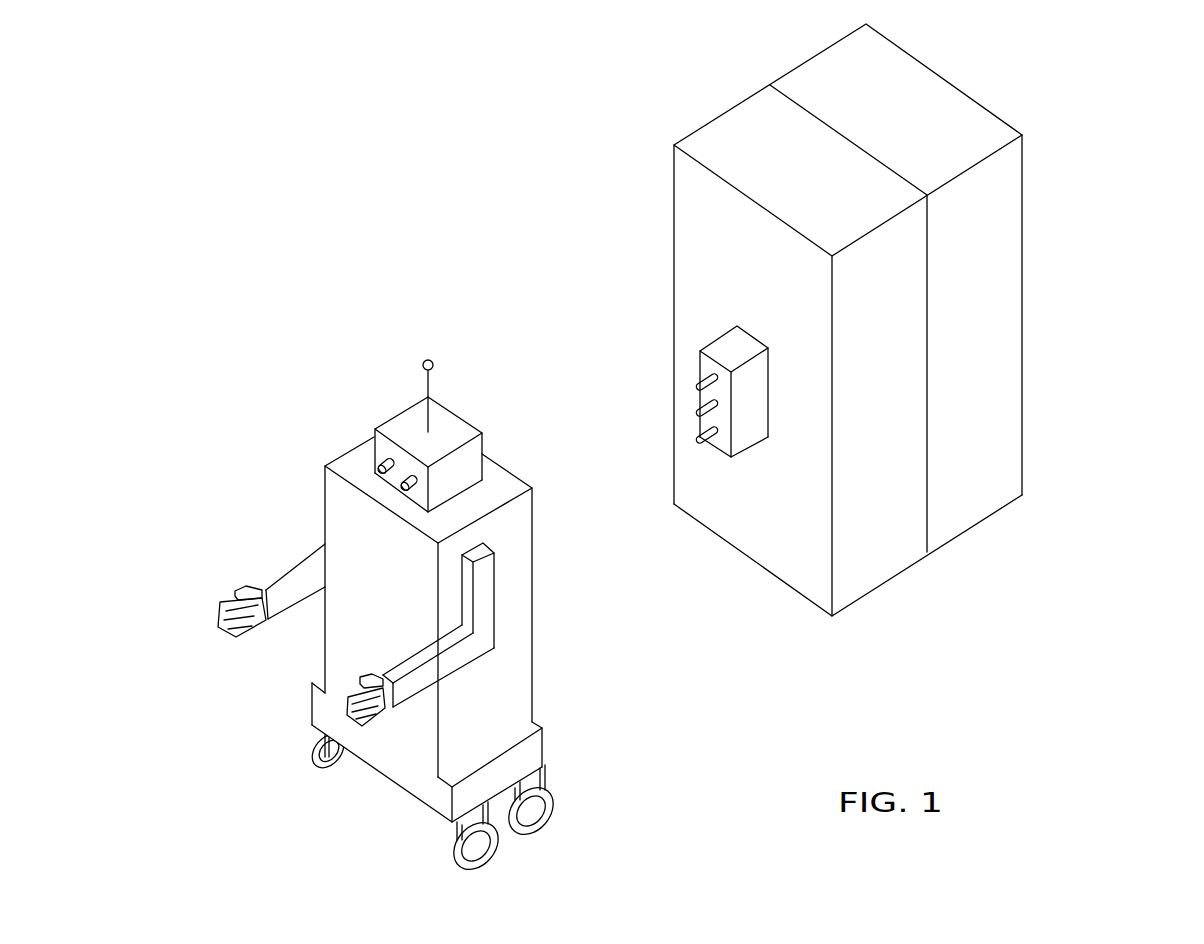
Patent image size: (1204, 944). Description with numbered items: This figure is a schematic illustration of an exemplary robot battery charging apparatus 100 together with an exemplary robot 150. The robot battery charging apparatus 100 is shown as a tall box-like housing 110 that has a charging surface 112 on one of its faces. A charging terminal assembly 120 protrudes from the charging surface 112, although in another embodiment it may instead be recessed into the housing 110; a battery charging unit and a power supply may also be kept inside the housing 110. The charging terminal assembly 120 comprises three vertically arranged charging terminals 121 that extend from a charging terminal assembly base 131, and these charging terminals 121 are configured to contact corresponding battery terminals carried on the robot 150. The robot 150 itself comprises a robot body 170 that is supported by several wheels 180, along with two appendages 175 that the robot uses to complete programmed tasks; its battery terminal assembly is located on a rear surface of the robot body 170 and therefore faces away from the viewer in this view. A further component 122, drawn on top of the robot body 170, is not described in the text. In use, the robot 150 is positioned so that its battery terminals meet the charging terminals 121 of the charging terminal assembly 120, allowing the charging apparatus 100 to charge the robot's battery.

The robot battery charging apparatus 100 is at (900, 320).
The housing 110 is at (1023, 265).
The charging surface 112 is at (782, 281).
The charging terminal assembly 120 is at (704, 382).
The charging terminals 121 is at (697, 353).
The charging terminal assembly base 131 is at (748, 437).
The robot head 122 is at (498, 462).
The robot 150 is at (410, 615).
The robot body 170 is at (386, 767).
The appendages 175 is at (280, 567).
The wheels 180 is at (313, 752).